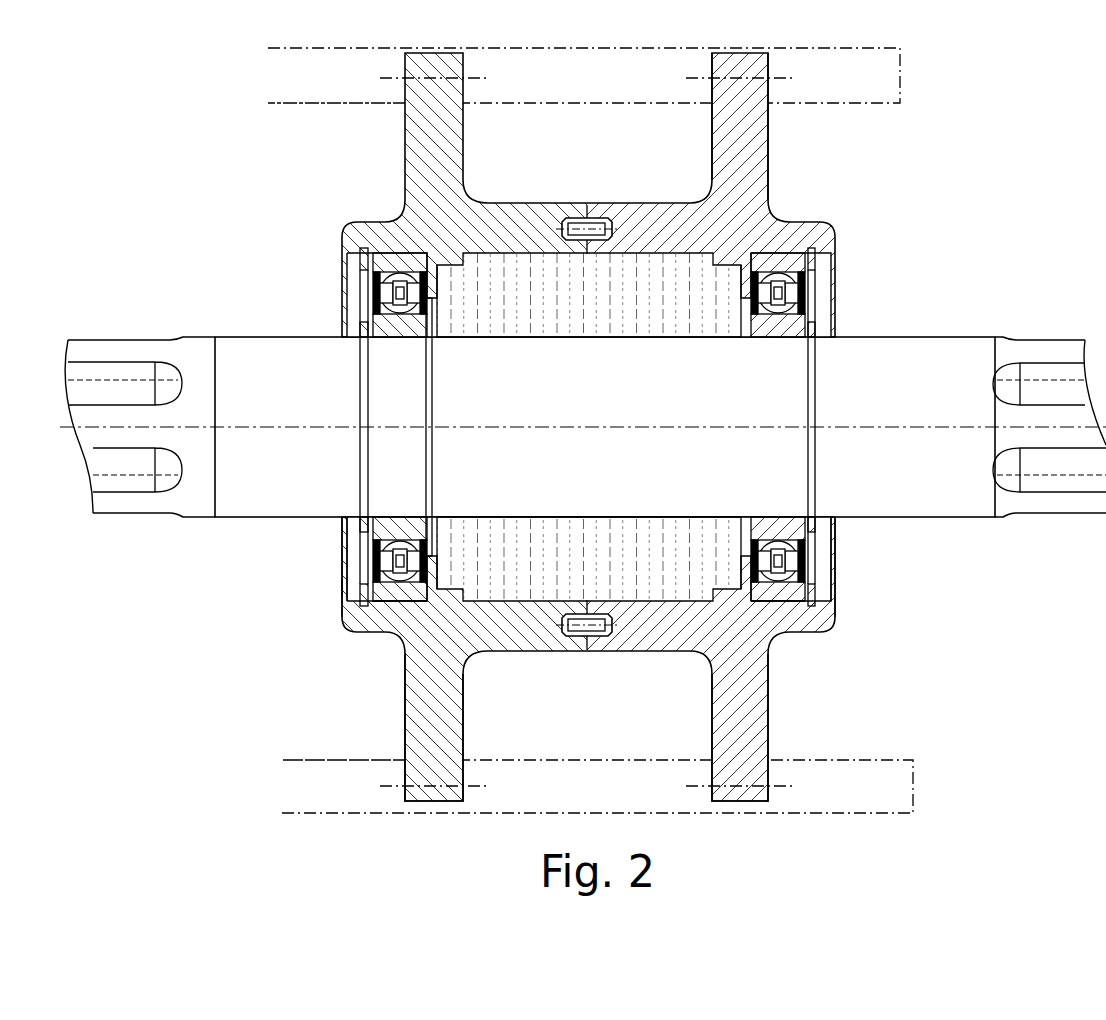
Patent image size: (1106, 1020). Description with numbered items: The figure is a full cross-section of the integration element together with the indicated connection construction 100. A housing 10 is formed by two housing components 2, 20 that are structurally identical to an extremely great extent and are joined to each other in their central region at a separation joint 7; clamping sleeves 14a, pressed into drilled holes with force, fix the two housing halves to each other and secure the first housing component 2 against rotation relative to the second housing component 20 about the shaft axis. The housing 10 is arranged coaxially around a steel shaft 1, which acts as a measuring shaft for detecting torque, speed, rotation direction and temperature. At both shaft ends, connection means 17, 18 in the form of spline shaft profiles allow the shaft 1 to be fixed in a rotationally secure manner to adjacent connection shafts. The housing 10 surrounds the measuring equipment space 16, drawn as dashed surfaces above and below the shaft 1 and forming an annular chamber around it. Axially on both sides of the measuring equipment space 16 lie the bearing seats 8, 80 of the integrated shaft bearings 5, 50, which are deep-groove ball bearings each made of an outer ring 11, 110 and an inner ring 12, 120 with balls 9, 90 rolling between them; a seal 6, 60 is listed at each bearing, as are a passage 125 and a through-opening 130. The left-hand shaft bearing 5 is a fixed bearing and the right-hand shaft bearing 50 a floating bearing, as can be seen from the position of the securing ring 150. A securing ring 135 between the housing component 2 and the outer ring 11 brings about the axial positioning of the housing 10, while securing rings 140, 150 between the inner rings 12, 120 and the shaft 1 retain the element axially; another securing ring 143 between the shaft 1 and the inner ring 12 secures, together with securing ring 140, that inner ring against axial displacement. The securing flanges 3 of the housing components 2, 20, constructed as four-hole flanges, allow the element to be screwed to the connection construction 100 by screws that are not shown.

The shaft 1 is at (683, 397).
The housing component 2 is at (405, 134).
The securing flange 3 is at (420, 702).
The shaft bearing 5 is at (378, 603).
The seal 6 is at (343, 588).
The separation joint 7 is at (587, 212).
The bearing seat 8 is at (440, 600).
The rolling or sliding member 9 is at (375, 290).
The housing 10 is at (768, 673).
The outer ring 11 is at (397, 260).
The inner ring 12 is at (380, 324).
The clamping sleeve 14a is at (588, 637).
The measuring equipment space 16 is at (601, 317).
The connection means 17 is at (215, 332).
The connection means 18 is at (1105, 332).
The housing component 20 is at (768, 128).
The shaft bearing 50 is at (816, 584).
The seal 60 is at (812, 557).
The bearing seat 80 is at (808, 603).
The rolling or sliding member 90 is at (805, 290).
The connection construction 100 is at (877, 93).
The outer ring 110 is at (777, 262).
The inner ring 120 is at (805, 318).
The passage 125 is at (344, 538).
The through-opening 130 is at (836, 538).
The securing ring 135 is at (362, 250).
The securing ring 140 is at (363, 341).
The securing ring 143 is at (432, 341).
The securing ring 150 is at (814, 341).